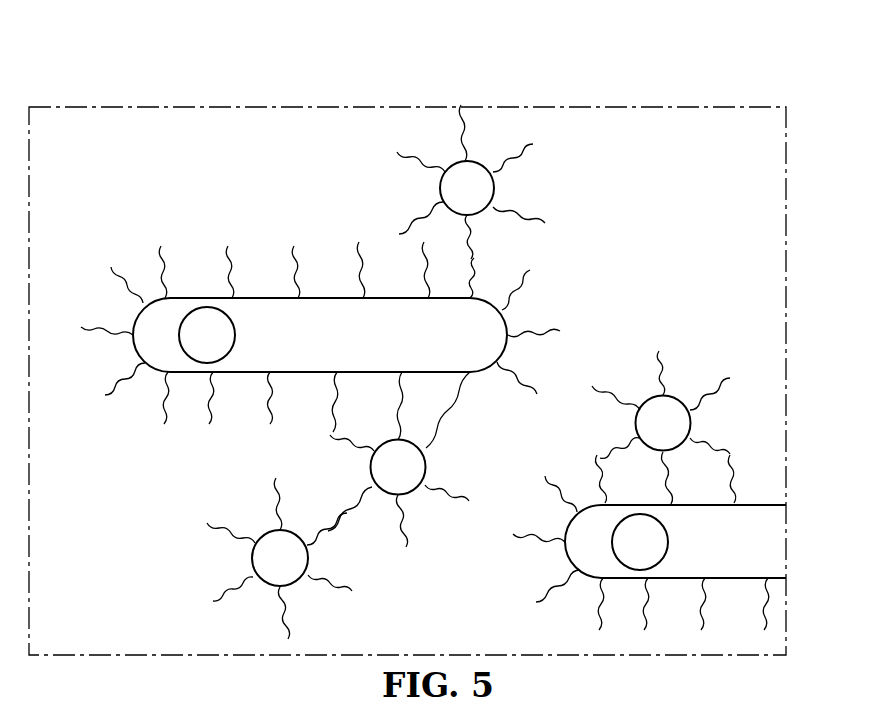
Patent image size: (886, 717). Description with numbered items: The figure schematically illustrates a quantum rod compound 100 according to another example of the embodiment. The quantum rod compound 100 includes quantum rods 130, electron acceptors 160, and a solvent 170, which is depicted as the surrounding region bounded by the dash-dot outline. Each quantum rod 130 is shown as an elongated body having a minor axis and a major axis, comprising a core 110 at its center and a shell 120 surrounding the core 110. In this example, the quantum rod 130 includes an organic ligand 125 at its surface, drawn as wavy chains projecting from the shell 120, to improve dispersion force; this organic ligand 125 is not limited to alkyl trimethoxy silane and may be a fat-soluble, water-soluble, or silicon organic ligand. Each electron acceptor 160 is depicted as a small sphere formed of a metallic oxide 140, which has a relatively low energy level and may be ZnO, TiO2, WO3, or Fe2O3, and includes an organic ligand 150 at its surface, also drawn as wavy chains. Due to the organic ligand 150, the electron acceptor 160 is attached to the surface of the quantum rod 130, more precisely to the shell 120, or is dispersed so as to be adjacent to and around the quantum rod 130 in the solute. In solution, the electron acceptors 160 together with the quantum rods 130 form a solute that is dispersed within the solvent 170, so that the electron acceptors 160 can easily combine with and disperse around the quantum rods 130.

The quantum rod compound 100 is at (700, 88).
The core 110 is at (207, 323).
The shell 120 is at (265, 313).
The organic ligand 125 is at (302, 297).
The quantum rod 130 is at (313, 190).
The metallic oxide 140 is at (482, 190).
The organic ligand 150 is at (545, 222).
The electron acceptor 160 is at (585, 177).
The solvent 170 is at (758, 313).